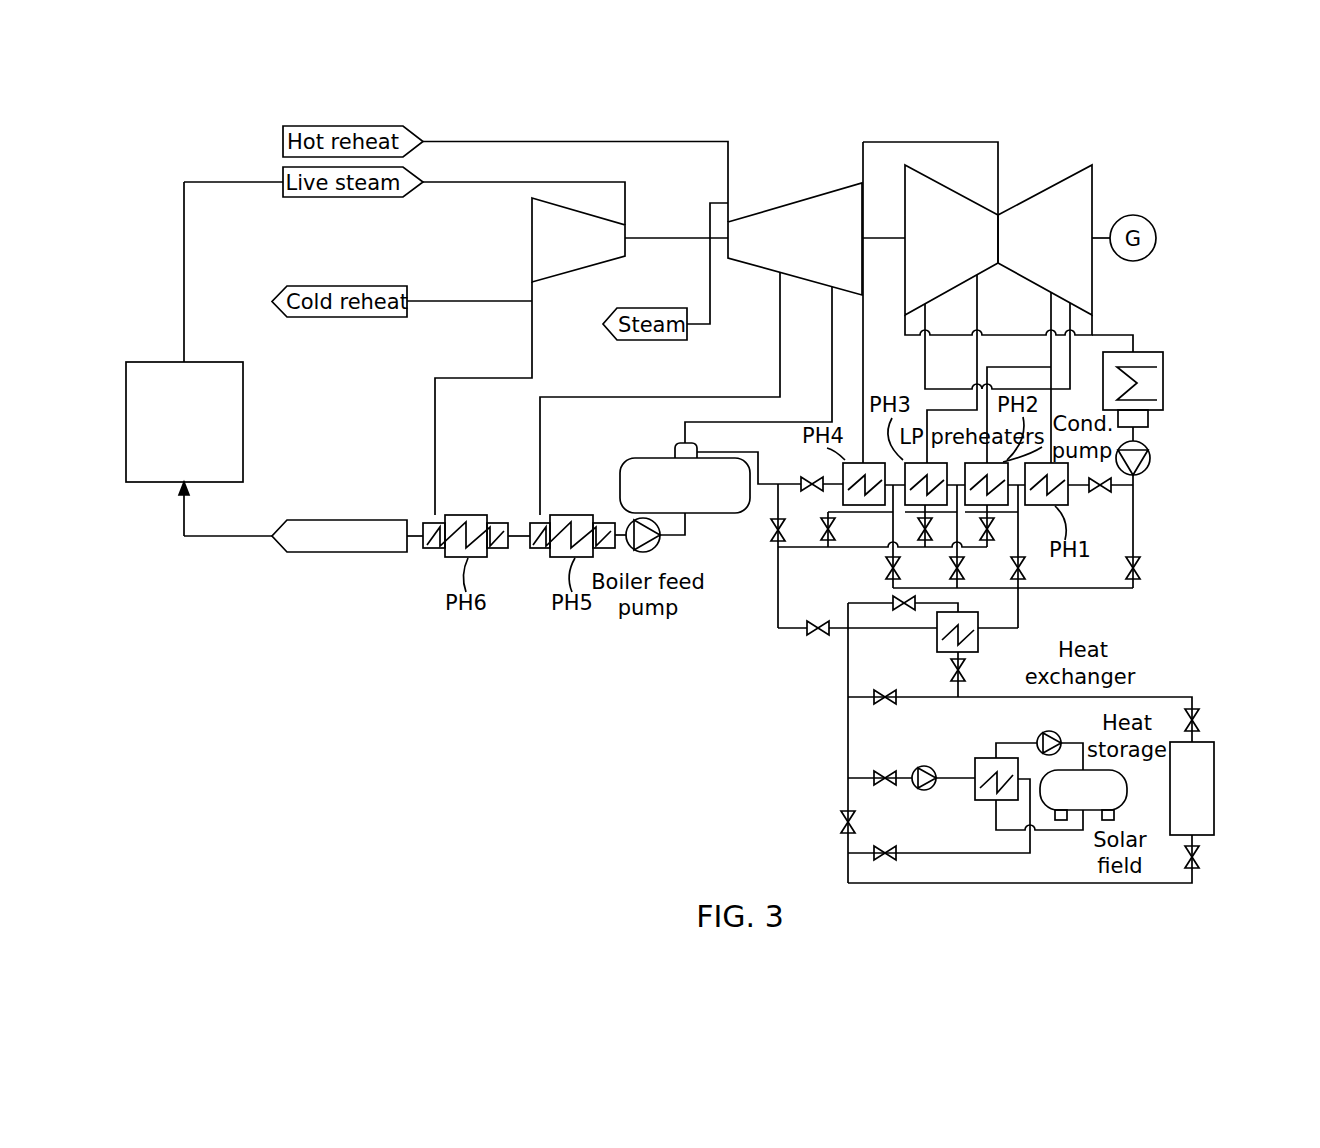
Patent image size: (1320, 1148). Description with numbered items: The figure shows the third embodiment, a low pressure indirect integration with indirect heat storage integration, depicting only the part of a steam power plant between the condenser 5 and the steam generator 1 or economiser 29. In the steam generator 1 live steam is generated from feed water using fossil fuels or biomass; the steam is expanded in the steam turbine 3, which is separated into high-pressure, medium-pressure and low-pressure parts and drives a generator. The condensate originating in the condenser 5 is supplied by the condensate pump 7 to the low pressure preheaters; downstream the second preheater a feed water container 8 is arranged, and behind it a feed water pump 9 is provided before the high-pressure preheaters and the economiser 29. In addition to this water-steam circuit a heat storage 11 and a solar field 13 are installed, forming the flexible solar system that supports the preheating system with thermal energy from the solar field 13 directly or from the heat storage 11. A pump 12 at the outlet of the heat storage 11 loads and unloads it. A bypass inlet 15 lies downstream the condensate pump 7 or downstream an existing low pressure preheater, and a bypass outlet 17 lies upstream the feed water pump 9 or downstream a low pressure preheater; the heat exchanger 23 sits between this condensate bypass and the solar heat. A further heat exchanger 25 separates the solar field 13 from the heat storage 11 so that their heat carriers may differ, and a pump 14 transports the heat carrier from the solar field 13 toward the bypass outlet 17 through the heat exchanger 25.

The steam generator 1 is at (245, 420).
The steam turbine 3 is at (792, 174).
The condenser 5 is at (1152, 350).
The condensate pump 7 is at (1152, 447).
The feed water container 8 is at (620, 462).
The feed water pump 9 is at (665, 543).
The heat storage 11 is at (1127, 780).
The pump 12 is at (1040, 730).
The solar field 13 is at (1215, 818).
The pump 14 is at (925, 766).
The bypass inlet 15 is at (1138, 548).
The bypass outlet 17 is at (774, 505).
The heat exchanger 23 is at (980, 640).
The heat exchanger 25 is at (983, 760).
The economiser 29 is at (354, 555).